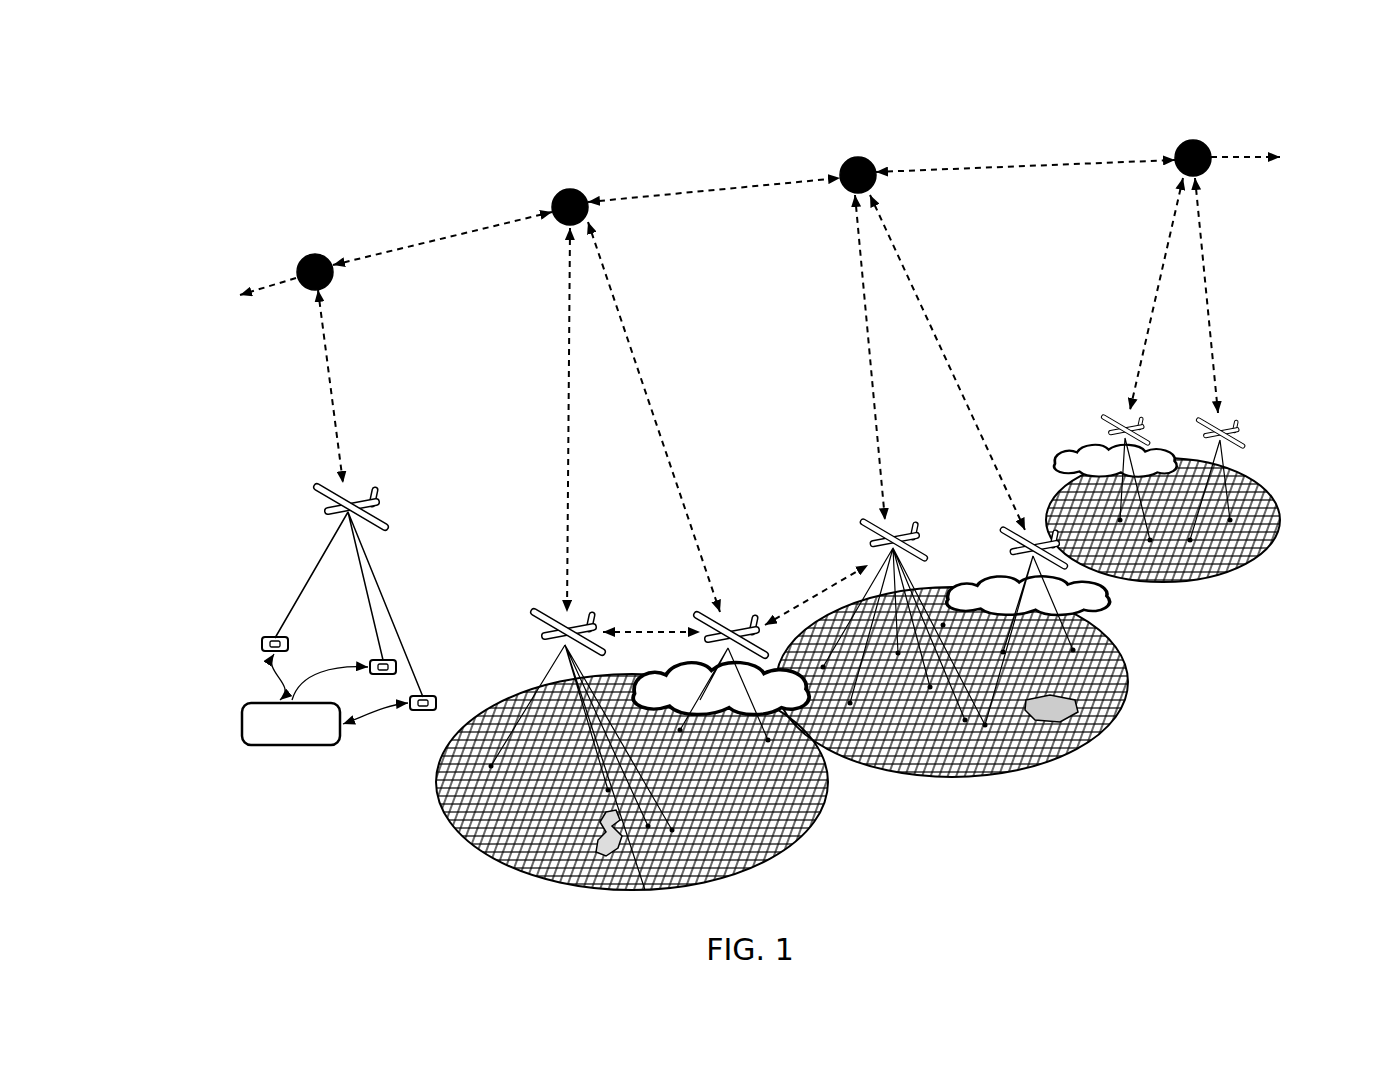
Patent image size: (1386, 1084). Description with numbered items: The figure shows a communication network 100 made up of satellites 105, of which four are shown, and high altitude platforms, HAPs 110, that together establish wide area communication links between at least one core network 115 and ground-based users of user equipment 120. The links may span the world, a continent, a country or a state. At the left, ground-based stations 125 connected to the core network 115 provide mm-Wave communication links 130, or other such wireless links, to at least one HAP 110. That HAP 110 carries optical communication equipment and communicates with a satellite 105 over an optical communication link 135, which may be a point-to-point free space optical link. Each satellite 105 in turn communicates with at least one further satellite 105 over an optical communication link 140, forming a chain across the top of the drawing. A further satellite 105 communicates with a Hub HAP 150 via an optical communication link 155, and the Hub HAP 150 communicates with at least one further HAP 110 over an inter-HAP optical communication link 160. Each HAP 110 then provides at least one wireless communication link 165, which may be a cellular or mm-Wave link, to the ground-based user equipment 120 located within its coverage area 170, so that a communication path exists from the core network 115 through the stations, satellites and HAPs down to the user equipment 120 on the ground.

The communication network 100 is at (820, 100).
The satellite 105 is at (322, 255).
The HAP 110 is at (352, 490).
The core network 115 is at (290, 748).
The user equipment 120 is at (615, 858).
The ground-based station 125 is at (262, 642).
The mm-Wave communication link 130 is at (400, 635).
The optical communication link 135 is at (332, 388).
The optical communication link 140 is at (473, 230).
The Hub HAP 150 is at (705, 590).
The optical communication link 155 is at (634, 346).
The inter-HAP optical communication link 160 is at (640, 628).
The wireless communication link 165 is at (543, 665).
The coverage area 170 is at (825, 815).